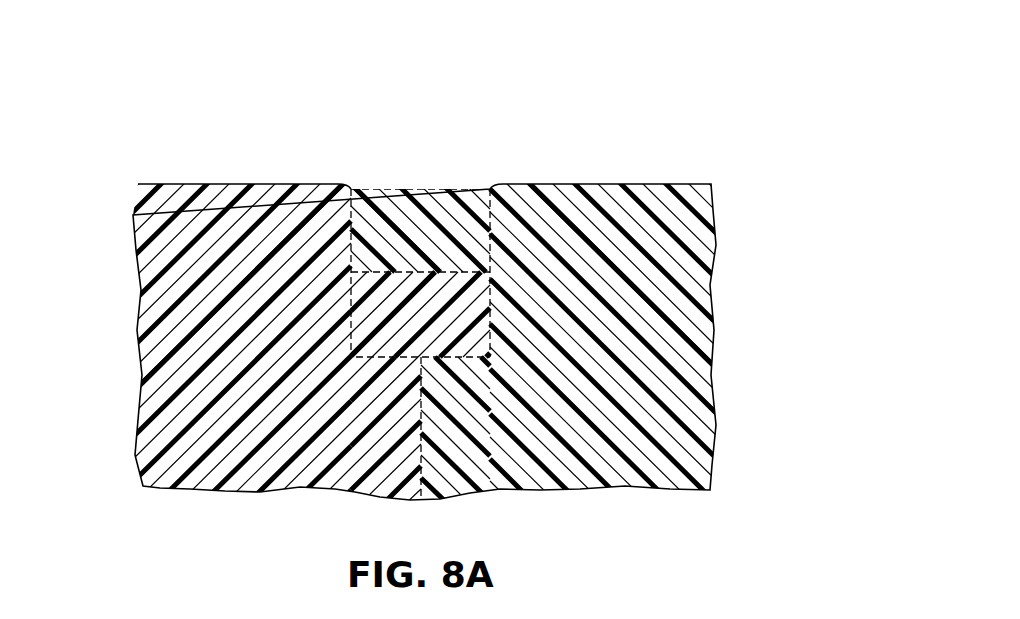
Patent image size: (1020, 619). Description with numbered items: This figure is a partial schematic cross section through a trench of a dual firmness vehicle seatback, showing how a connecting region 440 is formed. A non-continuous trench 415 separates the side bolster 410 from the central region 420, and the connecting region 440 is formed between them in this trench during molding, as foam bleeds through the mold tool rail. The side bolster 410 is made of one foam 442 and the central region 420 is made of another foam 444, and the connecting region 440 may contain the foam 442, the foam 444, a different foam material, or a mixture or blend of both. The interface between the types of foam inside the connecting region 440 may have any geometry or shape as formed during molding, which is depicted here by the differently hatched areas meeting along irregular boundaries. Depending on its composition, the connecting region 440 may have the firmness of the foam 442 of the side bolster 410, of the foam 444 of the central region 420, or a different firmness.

The non-continuous trench 415 is at (478, 92).
The side bolster 410 is at (238, 184).
The central region 420 is at (603, 184).
The connecting region 440 is at (427, 180).
The foam 442 is at (420, 311).
The foam 444 is at (402, 222).